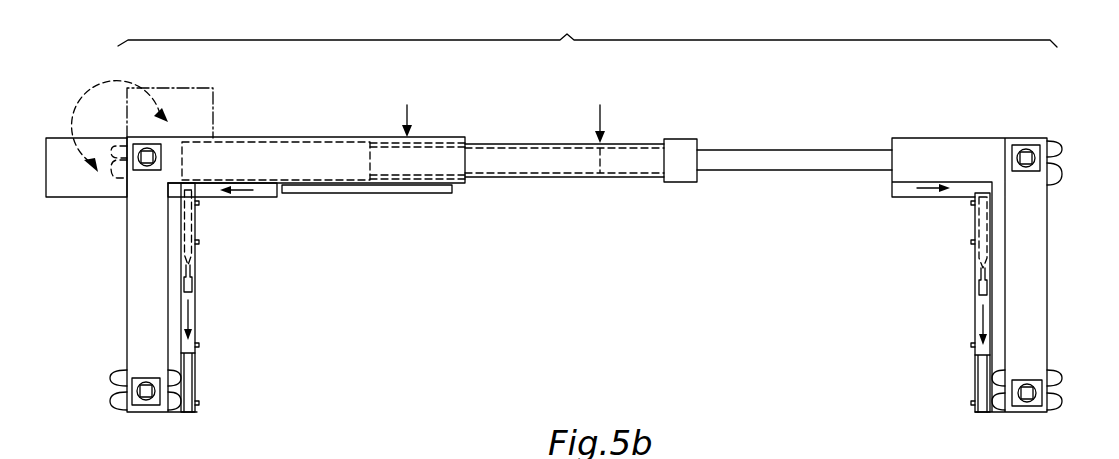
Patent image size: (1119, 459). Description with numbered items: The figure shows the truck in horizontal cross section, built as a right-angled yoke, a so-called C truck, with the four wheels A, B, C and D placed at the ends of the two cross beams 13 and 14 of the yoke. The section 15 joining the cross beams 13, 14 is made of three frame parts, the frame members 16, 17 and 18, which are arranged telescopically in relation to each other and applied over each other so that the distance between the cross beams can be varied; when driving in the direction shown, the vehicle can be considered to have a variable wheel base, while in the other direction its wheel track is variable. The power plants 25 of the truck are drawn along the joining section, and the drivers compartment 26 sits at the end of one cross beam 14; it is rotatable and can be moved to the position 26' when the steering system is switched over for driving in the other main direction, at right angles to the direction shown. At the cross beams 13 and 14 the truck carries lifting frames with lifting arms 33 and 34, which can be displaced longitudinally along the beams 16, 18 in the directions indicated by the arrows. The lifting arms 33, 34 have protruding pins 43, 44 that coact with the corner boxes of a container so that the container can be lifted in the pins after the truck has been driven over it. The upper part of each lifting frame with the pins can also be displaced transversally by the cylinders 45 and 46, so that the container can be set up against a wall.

The cross beam 13 is at (1028, 243).
The cross beam 14 is at (145, 280).
The section joining the cross beams 15 is at (587, 28).
The frame member 16 is at (300, 137).
The frame member 17 is at (508, 144).
The frame member 18 is at (770, 150).
The power plants 25 is at (397, 183).
The drivers compartment 26 is at (86, 193).
The drivers compartment position 26' is at (199, 99).
The lifting arm 33 is at (188, 302).
The lifting arm 34 is at (978, 300).
The protruding pin 43 is at (198, 403).
The protruding pin 44 is at (972, 405).
The cylinder 45 is at (190, 225).
The cylinder 46 is at (978, 228).
The wheel A is at (1057, 139).
The wheel B is at (112, 147).
The wheel C is at (1060, 377).
The wheel D is at (110, 378).